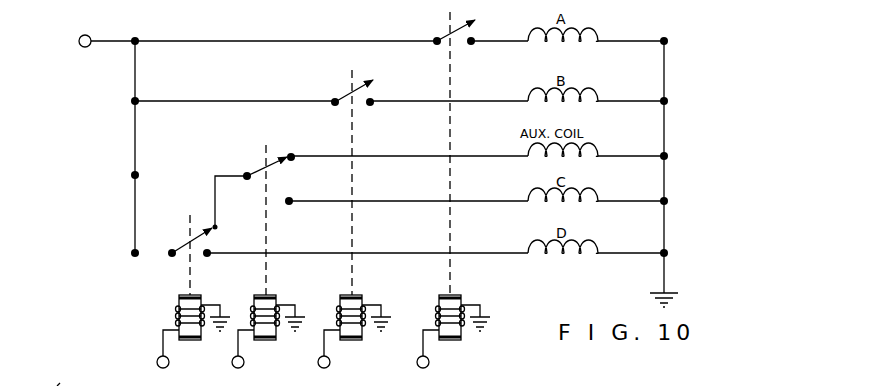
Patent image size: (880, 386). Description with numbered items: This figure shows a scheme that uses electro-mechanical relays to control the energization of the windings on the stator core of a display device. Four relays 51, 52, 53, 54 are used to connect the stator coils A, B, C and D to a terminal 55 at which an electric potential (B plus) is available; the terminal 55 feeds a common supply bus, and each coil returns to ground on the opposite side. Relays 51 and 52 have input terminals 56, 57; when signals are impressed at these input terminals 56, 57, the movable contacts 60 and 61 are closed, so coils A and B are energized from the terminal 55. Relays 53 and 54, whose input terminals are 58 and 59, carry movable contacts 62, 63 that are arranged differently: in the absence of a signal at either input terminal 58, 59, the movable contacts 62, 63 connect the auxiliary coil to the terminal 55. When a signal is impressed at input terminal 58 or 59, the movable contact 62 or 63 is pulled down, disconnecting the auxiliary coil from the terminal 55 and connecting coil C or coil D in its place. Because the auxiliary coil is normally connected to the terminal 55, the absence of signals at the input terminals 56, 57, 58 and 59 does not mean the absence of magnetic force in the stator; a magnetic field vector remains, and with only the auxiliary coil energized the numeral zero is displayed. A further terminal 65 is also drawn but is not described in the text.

The terminal 55 is at (90, 36).
The movable contact 60 is at (454, 32).
The movable contact 61 is at (352, 92).
The movable contact 62 is at (267, 167).
The movable contact 63 is at (190, 243).
The relay 51 is at (461, 300).
The relay 52 is at (362, 300).
The relay 53 is at (276, 300).
The relay 54 is at (201, 300).
The input terminal 56 is at (429, 363).
The input terminal 57 is at (330, 363).
The input terminal 58 is at (244, 363).
The input terminal 59 is at (169, 363).
The terminal 65 is at (60, 383).